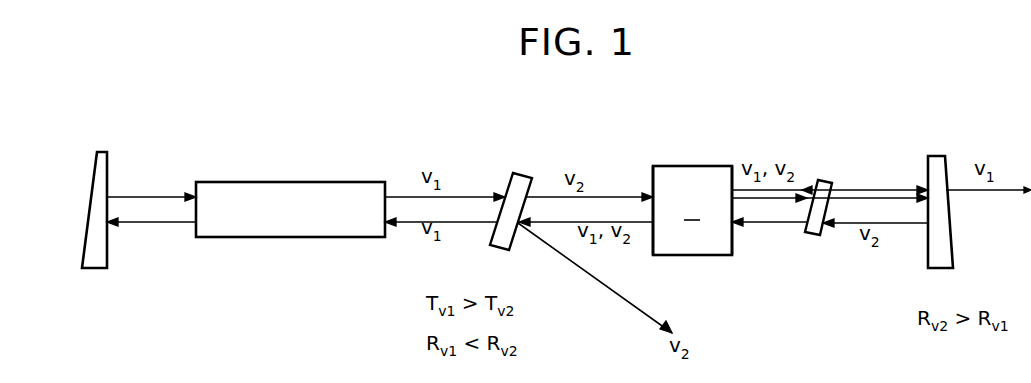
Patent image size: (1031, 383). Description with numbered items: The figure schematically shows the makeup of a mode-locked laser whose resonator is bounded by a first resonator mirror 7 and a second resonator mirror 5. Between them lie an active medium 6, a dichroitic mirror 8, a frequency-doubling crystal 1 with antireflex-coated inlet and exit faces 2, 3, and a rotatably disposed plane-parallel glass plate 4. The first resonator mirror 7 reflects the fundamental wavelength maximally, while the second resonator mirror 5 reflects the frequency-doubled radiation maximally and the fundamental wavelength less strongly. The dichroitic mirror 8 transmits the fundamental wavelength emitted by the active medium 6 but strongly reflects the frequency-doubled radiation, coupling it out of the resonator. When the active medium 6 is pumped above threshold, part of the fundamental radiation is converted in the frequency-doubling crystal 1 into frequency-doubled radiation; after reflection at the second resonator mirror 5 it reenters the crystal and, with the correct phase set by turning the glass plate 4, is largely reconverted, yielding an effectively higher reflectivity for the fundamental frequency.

The frequency-doubling crystal 1 is at (692, 210).
The inlet face 2 is at (653, 250).
The exit face 3 is at (732, 250).
The plane-parallel glass plate 4 is at (810, 236).
The second resonator mirror 5 is at (938, 266).
The active medium 6 is at (253, 232).
The first resonator mirror 7 is at (93, 266).
The dichroitic mirror 8 is at (495, 246).